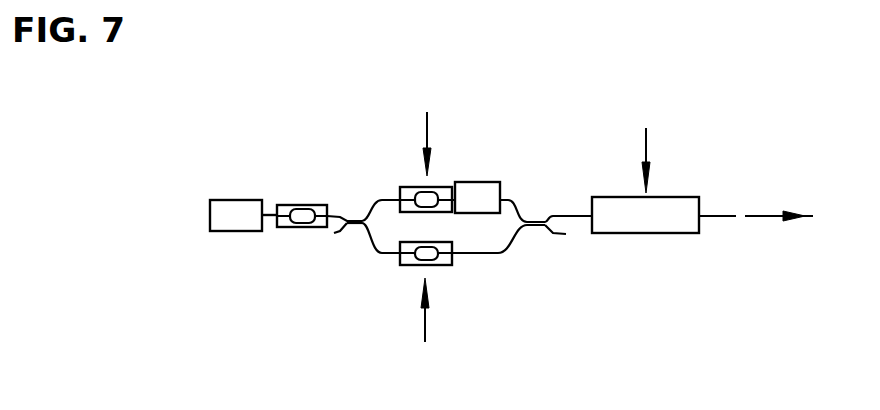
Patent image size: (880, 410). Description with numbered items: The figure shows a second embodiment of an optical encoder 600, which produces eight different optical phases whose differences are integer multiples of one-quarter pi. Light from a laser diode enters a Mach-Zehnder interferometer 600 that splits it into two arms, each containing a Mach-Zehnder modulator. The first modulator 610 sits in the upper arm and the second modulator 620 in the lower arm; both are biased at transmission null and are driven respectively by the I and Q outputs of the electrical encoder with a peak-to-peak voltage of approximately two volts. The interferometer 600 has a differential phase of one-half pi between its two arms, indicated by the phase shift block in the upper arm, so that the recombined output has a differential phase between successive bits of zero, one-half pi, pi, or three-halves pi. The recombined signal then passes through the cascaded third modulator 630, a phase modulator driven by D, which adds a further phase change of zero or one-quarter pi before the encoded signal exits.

The optical encoder 600 is at (164, 109).
The first modulator 610 is at (418, 187).
The second modulator 620 is at (403, 267).
The third modulator 630 is at (675, 197).